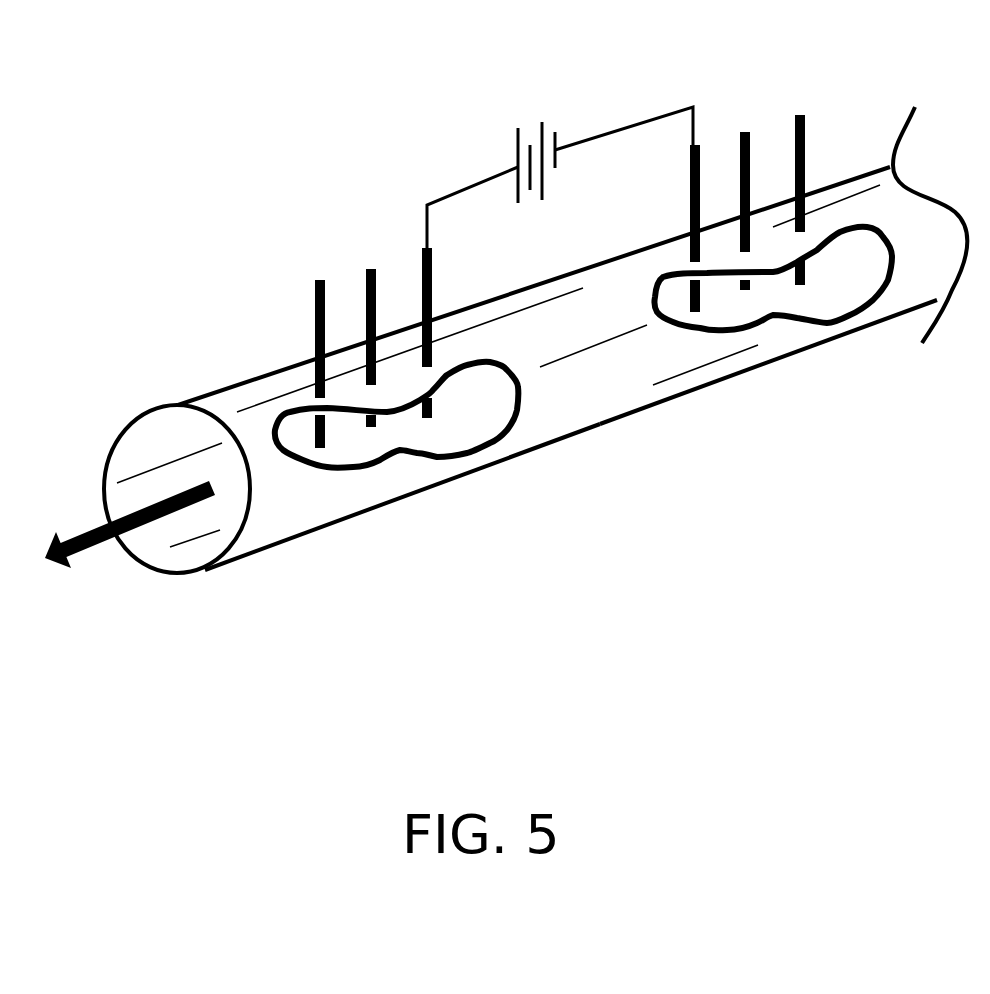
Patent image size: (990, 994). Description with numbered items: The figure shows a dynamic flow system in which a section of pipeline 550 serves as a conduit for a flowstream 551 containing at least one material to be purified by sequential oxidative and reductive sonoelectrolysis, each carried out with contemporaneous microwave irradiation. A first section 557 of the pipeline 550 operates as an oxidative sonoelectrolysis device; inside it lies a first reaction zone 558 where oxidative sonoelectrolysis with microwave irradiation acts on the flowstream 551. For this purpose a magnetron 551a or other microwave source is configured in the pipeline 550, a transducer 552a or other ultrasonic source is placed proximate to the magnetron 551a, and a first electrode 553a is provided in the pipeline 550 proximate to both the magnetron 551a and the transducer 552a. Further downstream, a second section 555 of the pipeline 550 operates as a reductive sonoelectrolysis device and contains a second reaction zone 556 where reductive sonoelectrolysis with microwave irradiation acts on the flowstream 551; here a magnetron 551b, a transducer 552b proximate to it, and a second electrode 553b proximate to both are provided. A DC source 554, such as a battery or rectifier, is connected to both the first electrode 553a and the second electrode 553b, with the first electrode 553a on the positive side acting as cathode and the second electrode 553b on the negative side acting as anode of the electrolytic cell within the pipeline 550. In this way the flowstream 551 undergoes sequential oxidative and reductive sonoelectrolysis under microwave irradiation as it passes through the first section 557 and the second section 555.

The pipeline 550 is at (208, 389).
The flowstream 551 is at (92, 550).
The magnetron 551a is at (808, 133).
The transducer 552a is at (748, 133).
The first electrode 553a is at (703, 147).
The magnetron 551b is at (313, 290).
The transducer 552b is at (370, 265).
The second electrode 553b is at (422, 250).
The DC source 554 is at (527, 117).
The second section 555 is at (380, 507).
The second reaction zone 556 is at (436, 436).
The first section 557 is at (783, 362).
The first reaction zone 558 is at (796, 304).